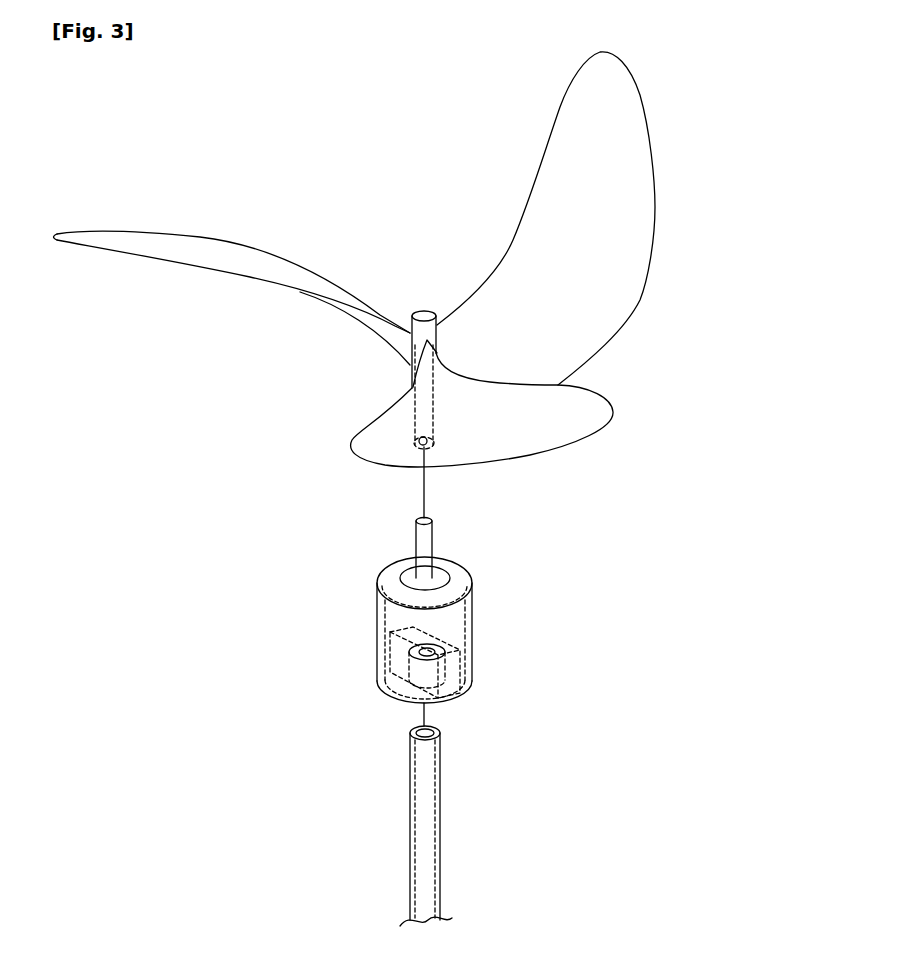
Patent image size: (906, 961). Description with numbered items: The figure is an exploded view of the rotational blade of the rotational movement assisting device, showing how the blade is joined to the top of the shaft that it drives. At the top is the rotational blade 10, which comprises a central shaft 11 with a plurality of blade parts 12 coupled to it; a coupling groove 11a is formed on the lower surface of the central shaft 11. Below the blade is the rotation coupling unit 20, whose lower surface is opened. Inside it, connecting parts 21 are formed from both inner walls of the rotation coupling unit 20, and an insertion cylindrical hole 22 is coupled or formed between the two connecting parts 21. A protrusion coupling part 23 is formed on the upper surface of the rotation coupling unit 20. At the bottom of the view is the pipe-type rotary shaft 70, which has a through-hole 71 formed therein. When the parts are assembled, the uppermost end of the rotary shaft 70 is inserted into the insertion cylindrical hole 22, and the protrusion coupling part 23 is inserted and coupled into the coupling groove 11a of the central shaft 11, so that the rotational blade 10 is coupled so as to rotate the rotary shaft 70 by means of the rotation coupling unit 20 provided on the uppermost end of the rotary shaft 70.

The rotational blade 10 is at (690, 57).
The central shaft 11 is at (426, 310).
The coupling groove 11a is at (418, 440).
The blade part 12 is at (173, 250).
The rotation coupling unit 20 is at (503, 520).
The connecting part 21 is at (453, 682).
The insertion cylindrical hole 22 is at (425, 665).
The protrusion coupling part 23 is at (416, 543).
The rotary shaft 70 is at (439, 814).
The through-hole 71 is at (427, 762).